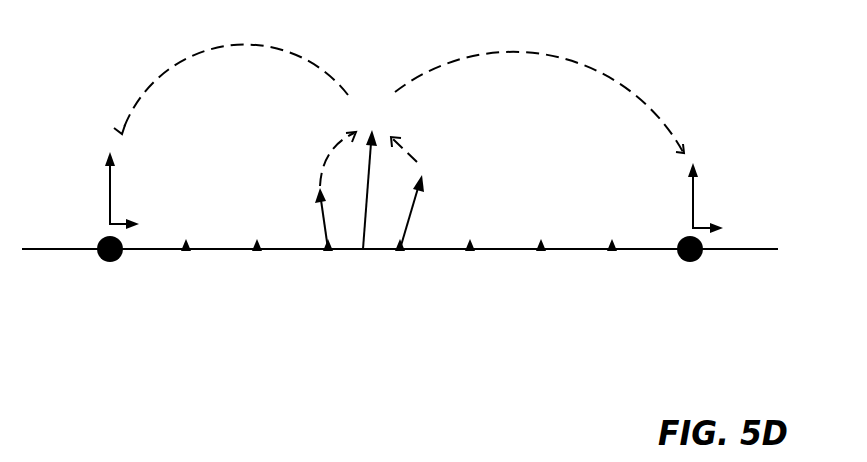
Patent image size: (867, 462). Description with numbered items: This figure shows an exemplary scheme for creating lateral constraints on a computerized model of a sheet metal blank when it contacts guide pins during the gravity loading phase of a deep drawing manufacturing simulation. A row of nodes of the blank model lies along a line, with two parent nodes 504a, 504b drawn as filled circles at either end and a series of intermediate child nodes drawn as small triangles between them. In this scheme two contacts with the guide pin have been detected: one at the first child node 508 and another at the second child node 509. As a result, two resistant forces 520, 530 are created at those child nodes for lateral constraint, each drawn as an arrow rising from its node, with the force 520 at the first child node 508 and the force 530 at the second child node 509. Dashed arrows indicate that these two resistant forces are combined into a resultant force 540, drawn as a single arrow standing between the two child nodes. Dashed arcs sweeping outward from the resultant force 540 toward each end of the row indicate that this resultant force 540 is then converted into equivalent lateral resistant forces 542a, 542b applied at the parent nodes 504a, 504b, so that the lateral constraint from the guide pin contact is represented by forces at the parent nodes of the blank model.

The parent node 504a is at (108, 260).
The parent node 504b is at (683, 260).
The first child node 508 is at (402, 256).
The second child node 509 is at (326, 256).
The lateral constraint force 520 is at (439, 212).
The resistant force 530 is at (300, 217).
The resultant force 540 is at (378, 176).
The equivalent lateral resistant force 542a is at (93, 190).
The equivalent lateral resistant force 542b is at (724, 198).